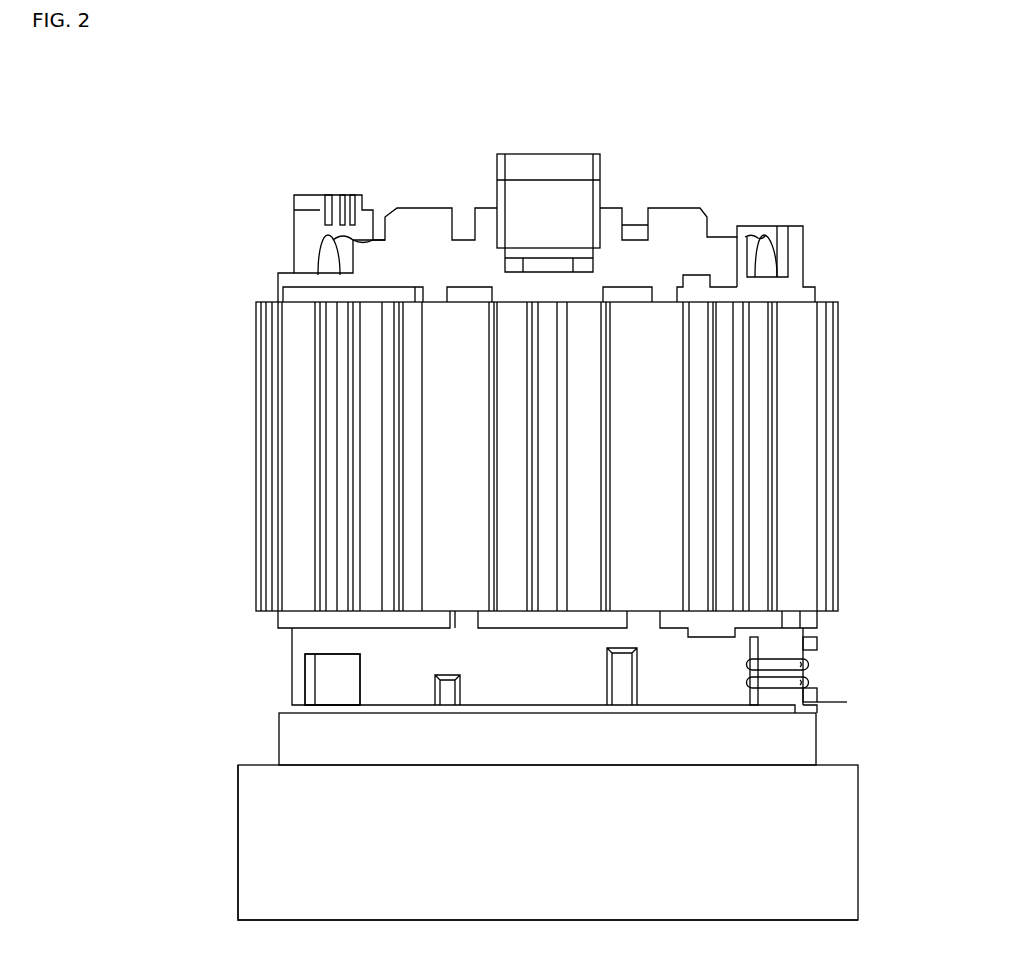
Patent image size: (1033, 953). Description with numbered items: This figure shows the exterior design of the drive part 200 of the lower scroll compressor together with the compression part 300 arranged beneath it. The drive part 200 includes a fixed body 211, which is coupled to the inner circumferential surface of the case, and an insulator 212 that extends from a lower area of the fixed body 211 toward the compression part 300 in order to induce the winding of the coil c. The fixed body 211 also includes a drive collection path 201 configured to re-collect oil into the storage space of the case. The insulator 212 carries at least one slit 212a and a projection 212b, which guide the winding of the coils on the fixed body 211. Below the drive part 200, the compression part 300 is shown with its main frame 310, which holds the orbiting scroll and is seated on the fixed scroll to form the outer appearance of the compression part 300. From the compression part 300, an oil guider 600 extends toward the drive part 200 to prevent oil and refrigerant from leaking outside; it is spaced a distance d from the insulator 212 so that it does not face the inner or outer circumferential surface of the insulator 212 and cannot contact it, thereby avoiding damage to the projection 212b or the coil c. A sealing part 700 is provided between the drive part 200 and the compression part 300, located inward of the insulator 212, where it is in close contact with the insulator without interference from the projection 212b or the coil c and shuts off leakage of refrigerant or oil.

The drive part 200 is at (820, 207).
The drive collection path 201 is at (520, 340).
The fixed body 211 is at (820, 388).
The insulator 212 is at (793, 650).
The slit 212a is at (810, 695).
The projection 212b is at (762, 650).
The coil c is at (810, 661).
The distance d is at (846, 683).
The compression part 300 is at (868, 850).
The main frame 310 is at (268, 883).
The oil guider 600 is at (293, 733).
The sealing part 700 is at (333, 680).